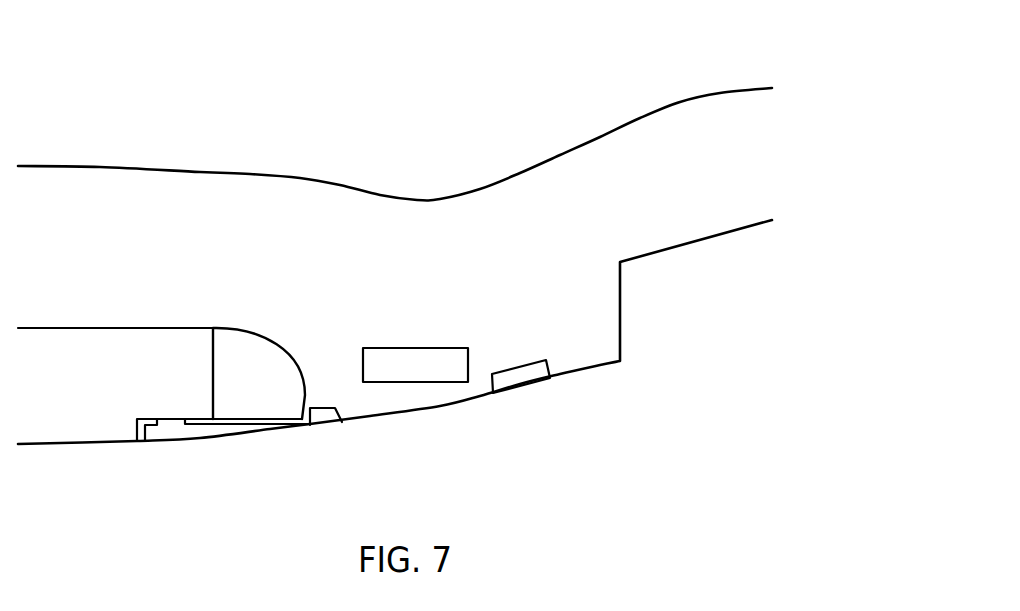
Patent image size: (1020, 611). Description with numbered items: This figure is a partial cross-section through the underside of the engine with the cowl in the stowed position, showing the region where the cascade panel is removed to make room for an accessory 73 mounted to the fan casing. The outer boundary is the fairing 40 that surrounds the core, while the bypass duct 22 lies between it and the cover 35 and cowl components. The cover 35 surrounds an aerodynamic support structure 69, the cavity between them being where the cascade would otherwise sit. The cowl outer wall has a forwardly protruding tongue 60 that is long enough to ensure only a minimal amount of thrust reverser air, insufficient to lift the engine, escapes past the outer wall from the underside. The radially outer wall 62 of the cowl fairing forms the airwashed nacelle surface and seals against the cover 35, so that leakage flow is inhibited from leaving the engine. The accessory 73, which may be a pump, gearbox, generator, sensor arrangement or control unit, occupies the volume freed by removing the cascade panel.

The bypass duct 22 is at (392, 277).
The cover 35 is at (50, 447).
The fairing 40 is at (658, 108).
The tongue 60 is at (205, 439).
The radially outer wall 62 is at (528, 387).
The aerodynamic support structure 69 is at (297, 355).
The accessory 73 is at (408, 370).